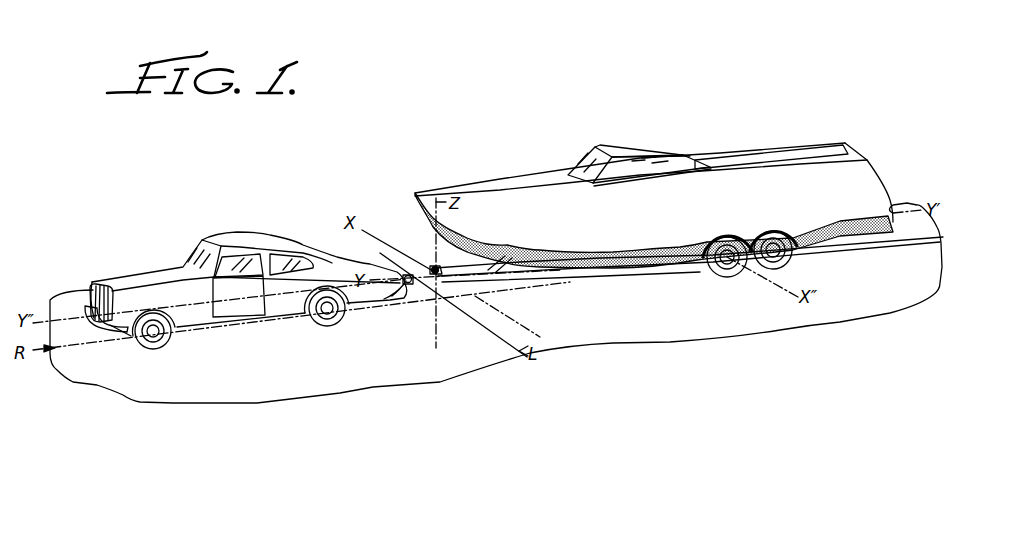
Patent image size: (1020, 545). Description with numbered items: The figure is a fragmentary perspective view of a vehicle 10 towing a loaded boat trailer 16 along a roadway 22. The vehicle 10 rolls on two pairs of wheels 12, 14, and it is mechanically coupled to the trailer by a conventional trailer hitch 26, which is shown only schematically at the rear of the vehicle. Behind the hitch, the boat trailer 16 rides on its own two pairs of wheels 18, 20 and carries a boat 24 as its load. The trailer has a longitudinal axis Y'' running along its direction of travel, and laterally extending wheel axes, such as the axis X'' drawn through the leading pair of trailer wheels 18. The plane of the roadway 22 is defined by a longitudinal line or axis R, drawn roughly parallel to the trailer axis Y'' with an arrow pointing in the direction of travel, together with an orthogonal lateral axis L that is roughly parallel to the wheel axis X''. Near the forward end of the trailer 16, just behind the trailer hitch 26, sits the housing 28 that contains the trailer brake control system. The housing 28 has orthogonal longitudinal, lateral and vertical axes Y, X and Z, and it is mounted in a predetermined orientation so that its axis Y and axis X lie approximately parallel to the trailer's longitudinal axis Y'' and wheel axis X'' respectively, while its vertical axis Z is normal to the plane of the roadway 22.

The vehicle 10 is at (232, 228).
The wheels 12 is at (172, 345).
The wheels 14 is at (342, 327).
The boat trailer 16 is at (613, 280).
The wheels 18 is at (722, 278).
The wheels 20 is at (800, 262).
The roadway 22 is at (367, 380).
The boat 24 is at (720, 153).
The trailer hitch 26 is at (377, 246).
The housing 28 is at (433, 266).